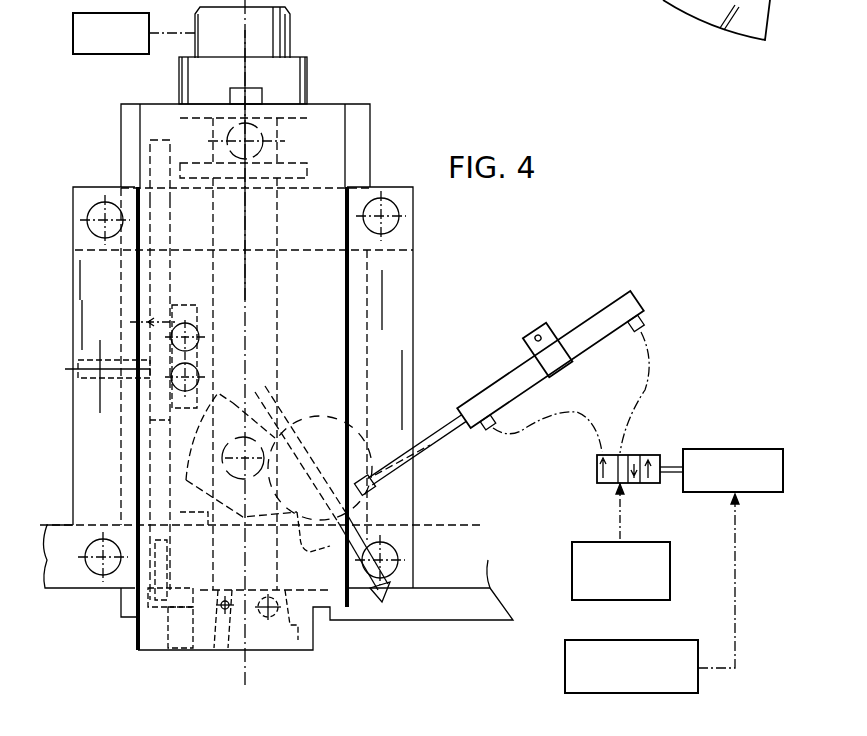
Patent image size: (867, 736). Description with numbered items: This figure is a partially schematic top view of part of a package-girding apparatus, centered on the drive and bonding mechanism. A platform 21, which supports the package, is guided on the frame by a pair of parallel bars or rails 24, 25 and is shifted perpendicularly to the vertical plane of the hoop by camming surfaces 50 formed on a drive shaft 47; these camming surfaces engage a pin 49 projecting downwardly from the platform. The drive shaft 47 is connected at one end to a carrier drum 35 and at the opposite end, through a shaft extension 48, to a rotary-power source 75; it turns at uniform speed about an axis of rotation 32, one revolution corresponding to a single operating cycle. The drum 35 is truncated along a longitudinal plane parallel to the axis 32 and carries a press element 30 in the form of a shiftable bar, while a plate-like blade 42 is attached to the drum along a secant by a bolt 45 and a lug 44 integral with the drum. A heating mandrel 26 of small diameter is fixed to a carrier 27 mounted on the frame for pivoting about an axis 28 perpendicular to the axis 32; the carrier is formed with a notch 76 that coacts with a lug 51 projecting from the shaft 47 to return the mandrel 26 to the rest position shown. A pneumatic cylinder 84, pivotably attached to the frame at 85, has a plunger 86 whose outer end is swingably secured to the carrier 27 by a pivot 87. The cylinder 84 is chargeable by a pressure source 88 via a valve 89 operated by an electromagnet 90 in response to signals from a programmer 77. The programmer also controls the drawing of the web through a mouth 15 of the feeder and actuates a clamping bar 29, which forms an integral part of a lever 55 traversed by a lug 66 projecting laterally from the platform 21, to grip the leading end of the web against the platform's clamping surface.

The mouth 15 is at (598, 10).
The platform 21 is at (330, 178).
The rail 24 is at (85, 325).
The rail 25 is at (398, 297).
The heating mandrel 26 is at (383, 597).
The carrier 27 is at (333, 412).
The axis 28 is at (230, 400).
The clamping bar 29 is at (160, 572).
The press element 30 is at (170, 630).
The axis of rotation 32 is at (248, 239).
The carrier drum 35 is at (205, 645).
The blade 42 is at (266, 630).
The lug 44 is at (224, 633).
The bolt 45 is at (299, 632).
The drive shaft 47 is at (258, 298).
The shaft extension 48 is at (283, 30).
The pin 49 is at (236, 128).
The camming surfaces 50 is at (287, 152).
The lug 51 is at (172, 508).
The lever 55 is at (152, 440).
The lug 66 is at (132, 300).
The rotary-power source 75 is at (92, 42).
The notch 76 is at (307, 548).
The programmer 77 is at (568, 664).
The pneumatic cylinder 84 is at (616, 310).
The pivot attachment 85 is at (538, 335).
The plunger 86 is at (440, 432).
The pivot 87 is at (372, 490).
The pressure source 88 is at (580, 560).
The valve 89 is at (598, 472).
The electromagnet 90 is at (745, 455).